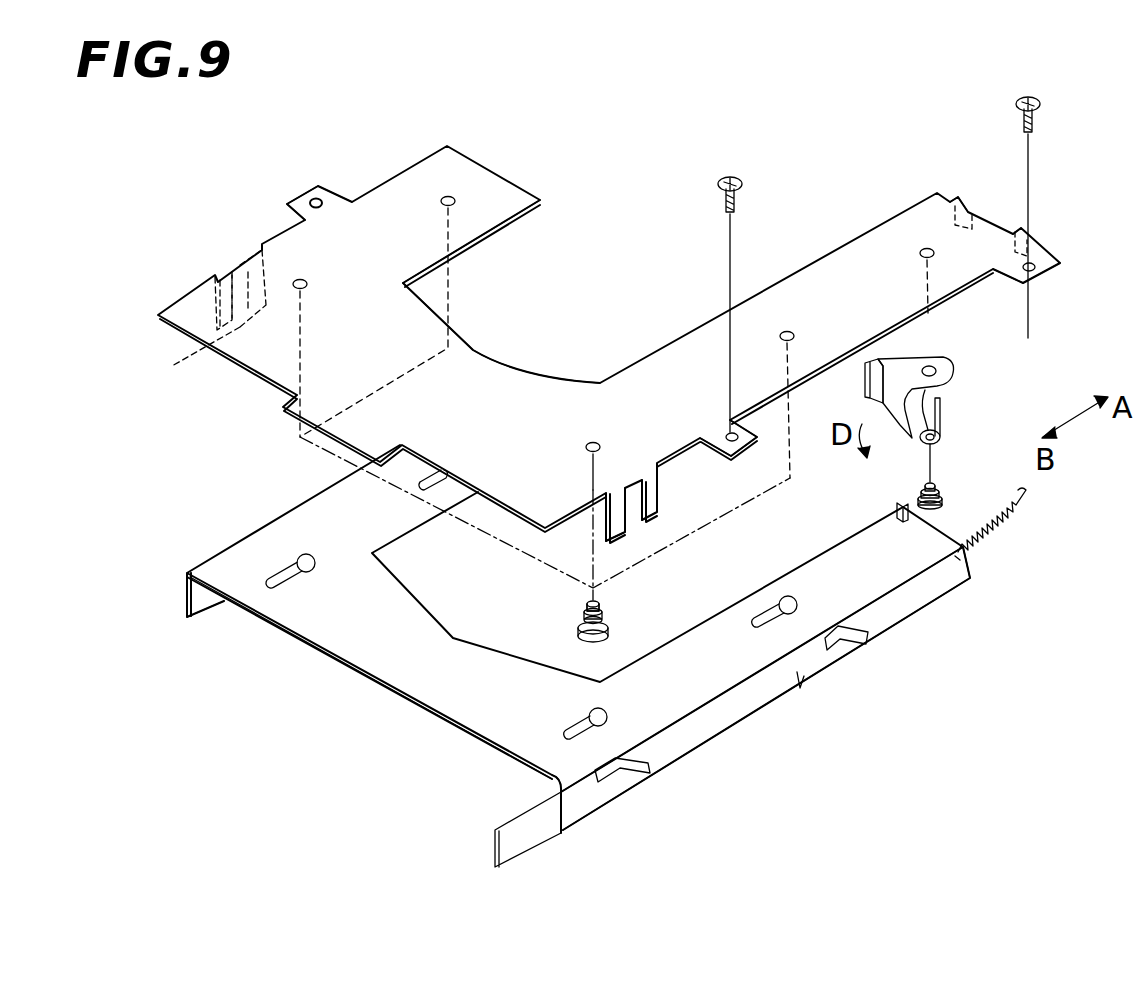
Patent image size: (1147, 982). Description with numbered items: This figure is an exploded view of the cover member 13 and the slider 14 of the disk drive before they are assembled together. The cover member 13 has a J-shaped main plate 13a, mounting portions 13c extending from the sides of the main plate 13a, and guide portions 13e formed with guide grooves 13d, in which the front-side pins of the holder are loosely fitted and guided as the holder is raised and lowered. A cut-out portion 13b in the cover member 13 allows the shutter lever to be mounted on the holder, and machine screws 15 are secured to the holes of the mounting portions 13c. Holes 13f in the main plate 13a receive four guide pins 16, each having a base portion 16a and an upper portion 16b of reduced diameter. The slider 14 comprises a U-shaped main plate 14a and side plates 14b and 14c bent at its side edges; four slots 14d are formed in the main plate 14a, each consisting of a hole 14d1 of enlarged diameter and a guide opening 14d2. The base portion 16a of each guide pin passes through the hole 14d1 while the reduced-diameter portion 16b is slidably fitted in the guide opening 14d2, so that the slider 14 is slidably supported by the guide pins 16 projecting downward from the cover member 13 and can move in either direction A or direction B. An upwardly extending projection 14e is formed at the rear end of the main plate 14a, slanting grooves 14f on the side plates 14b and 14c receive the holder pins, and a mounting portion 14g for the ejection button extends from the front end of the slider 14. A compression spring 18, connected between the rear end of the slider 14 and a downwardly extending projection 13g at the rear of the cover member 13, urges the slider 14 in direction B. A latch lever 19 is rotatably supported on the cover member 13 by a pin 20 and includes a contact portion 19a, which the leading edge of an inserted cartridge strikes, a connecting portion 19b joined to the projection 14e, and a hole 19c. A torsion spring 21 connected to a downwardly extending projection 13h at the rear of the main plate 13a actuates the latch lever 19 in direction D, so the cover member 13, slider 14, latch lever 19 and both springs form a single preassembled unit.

The cover member 13 is at (240, 383).
The main plate 13a is at (524, 378).
The cut-out portion 13b is at (535, 232).
The mounting portions 13c is at (318, 188).
The guide grooves 13d is at (676, 568).
The guide portions 13e is at (200, 290).
The holes 13f is at (455, 196).
The downwardly extending projection 13g is at (1030, 235).
The downwardly extending projection 13h is at (972, 208).
The slider 14 is at (382, 694).
The main plate 14a is at (312, 626).
The side plate 14b is at (186, 600).
The side plate 14c is at (712, 712).
The slots 14d is at (430, 486).
The hole 14d1 is at (592, 708).
The guide opening 14d2 is at (580, 722).
The projection 14e is at (895, 506).
The slanting grooves 14f is at (858, 642).
The mounting portion 14g is at (550, 828).
The machine screws 15 is at (745, 184).
The guide pins 16 is at (608, 612).
The base portion 16a is at (610, 632).
The upper portion 16b is at (572, 618).
The compression spring 18 is at (1002, 518).
The latch lever 19 is at (948, 362).
The contact portion 19a is at (862, 382).
The connecting portion 19b is at (946, 412).
The hole of lever 19c is at (918, 358).
The pin 20 is at (945, 498).
The torsion spring 21 is at (943, 437).